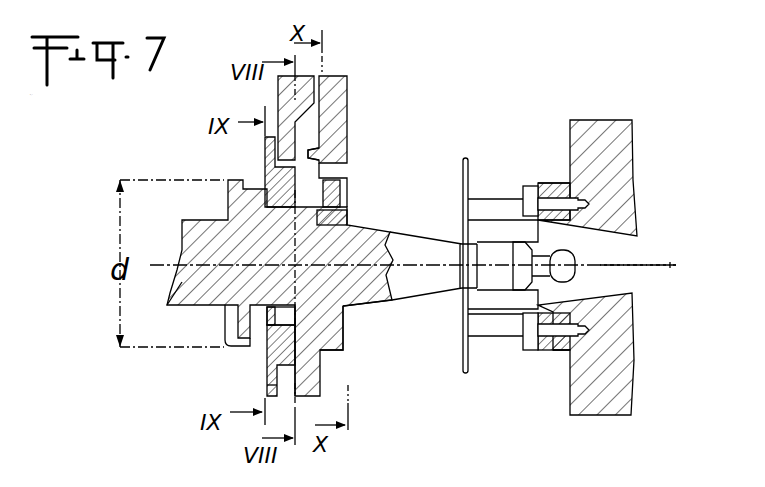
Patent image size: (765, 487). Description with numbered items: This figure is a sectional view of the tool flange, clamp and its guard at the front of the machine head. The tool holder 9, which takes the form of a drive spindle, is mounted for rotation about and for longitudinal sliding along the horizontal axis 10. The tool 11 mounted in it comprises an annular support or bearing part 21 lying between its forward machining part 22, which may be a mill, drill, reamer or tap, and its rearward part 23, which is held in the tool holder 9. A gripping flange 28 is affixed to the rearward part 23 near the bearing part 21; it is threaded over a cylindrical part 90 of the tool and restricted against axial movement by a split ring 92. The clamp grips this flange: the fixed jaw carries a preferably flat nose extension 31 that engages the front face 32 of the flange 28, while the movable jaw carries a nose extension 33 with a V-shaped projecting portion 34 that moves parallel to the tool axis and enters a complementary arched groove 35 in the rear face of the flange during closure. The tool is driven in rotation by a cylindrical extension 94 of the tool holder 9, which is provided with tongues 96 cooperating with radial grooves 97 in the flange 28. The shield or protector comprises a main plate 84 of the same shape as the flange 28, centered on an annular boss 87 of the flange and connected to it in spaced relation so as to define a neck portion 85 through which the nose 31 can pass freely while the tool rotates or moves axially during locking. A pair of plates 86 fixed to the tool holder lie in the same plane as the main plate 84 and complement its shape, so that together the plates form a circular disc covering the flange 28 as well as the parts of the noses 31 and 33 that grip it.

The tool holder 9 is at (610, 148).
The horizontal axis 10 is at (658, 268).
The tool 11 is at (178, 227).
The annular support or bearing part 21 is at (250, 348).
The forward machining part 22 is at (172, 280).
The rearward part 23 is at (429, 283).
The gripping flange 28 is at (310, 357).
The nose extension 31 is at (288, 124).
The front face 32 is at (285, 390).
The nose extension 33 is at (333, 92).
The V-shaped projecting portion 34 is at (312, 155).
The arched groove 35 is at (310, 378).
The main plate 84 is at (273, 173).
The neck portion 85 is at (285, 382).
The plates 86 is at (466, 350).
The annular boss 87 is at (280, 320).
The cylindrical part 90 is at (336, 306).
The split ring 92 is at (345, 225).
The cylindrical extension 94 is at (566, 352).
The tongues 96 is at (533, 190).
The radial grooves 97 is at (337, 188).